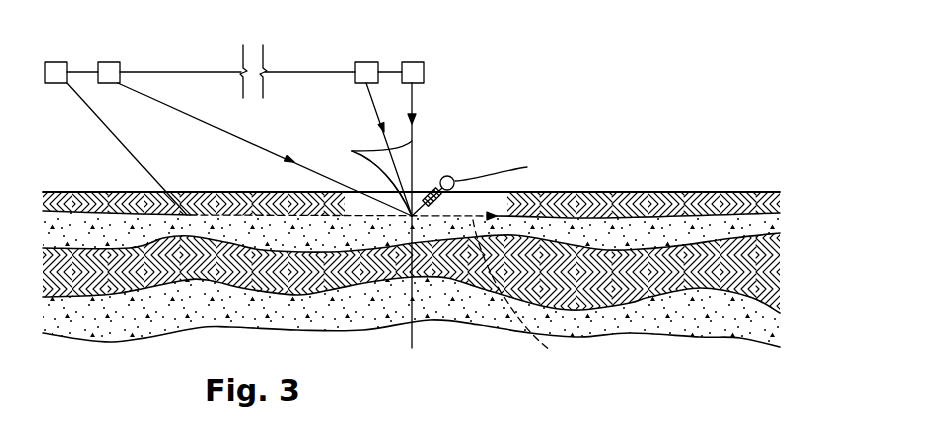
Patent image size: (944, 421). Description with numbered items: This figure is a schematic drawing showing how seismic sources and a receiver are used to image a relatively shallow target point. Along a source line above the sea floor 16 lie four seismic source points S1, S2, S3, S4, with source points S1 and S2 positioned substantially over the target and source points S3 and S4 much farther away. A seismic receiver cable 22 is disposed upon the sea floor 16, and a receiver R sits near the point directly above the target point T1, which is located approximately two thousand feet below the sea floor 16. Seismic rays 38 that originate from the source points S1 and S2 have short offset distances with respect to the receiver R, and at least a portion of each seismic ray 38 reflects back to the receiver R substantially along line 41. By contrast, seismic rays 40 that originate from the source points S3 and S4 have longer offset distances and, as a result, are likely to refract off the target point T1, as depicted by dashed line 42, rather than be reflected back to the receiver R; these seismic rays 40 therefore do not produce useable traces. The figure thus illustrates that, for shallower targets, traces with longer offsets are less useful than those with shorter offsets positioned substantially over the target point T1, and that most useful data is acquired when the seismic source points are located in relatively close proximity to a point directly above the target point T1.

The seismic source point S1 is at (365, 62).
The seismic source point S2 is at (412, 62).
The seismic source point S3 is at (53, 62).
The seismic source point S4 is at (109, 62).
The sea floor 16 is at (647, 192).
The seismic receiver cable 22 is at (449, 176).
The seismic rays 38 is at (366, 178).
The seismic rays 40 is at (116, 140).
The line 41 is at (422, 188).
The dashed line 42 is at (530, 296).
The receiver R is at (501, 165).
The target point T1 is at (397, 233).